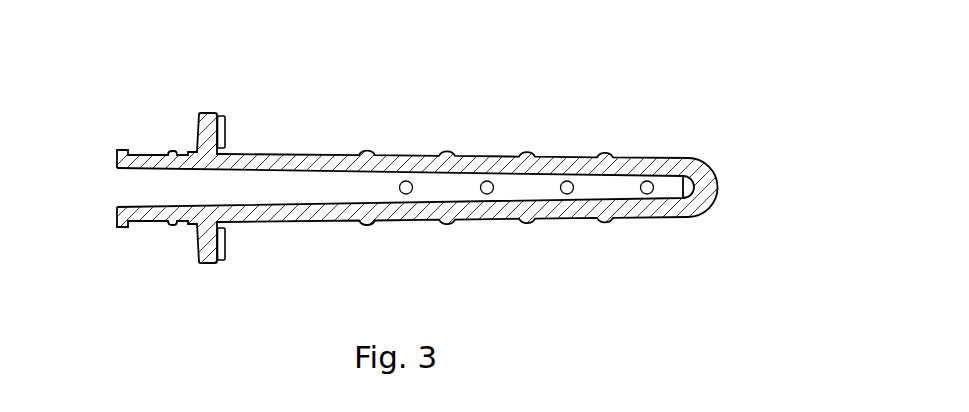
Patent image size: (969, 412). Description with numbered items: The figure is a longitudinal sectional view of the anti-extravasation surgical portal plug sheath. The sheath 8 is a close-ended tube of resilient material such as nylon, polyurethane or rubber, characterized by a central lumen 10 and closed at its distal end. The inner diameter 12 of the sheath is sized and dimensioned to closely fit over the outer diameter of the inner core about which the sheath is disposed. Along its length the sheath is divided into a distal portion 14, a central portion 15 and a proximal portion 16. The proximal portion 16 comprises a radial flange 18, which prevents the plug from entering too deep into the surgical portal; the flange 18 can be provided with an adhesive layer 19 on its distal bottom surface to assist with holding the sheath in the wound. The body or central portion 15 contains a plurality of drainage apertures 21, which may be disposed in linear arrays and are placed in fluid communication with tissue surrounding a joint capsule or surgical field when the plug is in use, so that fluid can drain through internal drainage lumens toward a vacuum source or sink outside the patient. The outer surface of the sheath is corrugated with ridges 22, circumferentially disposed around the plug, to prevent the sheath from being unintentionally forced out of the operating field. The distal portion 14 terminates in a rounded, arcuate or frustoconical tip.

The sheath 8 is at (349, 268).
The central lumen 10 is at (103, 190).
The inner diameter 12 is at (173, 173).
The distal portion 14 is at (697, 85).
The central portion 15 is at (487, 85).
The proximal portion 16 is at (288, 85).
The radial flange 18 is at (197, 122).
The adhesive layer 19 is at (242, 129).
The drainage apertures 21 is at (402, 181).
The ridges 22 is at (604, 156).